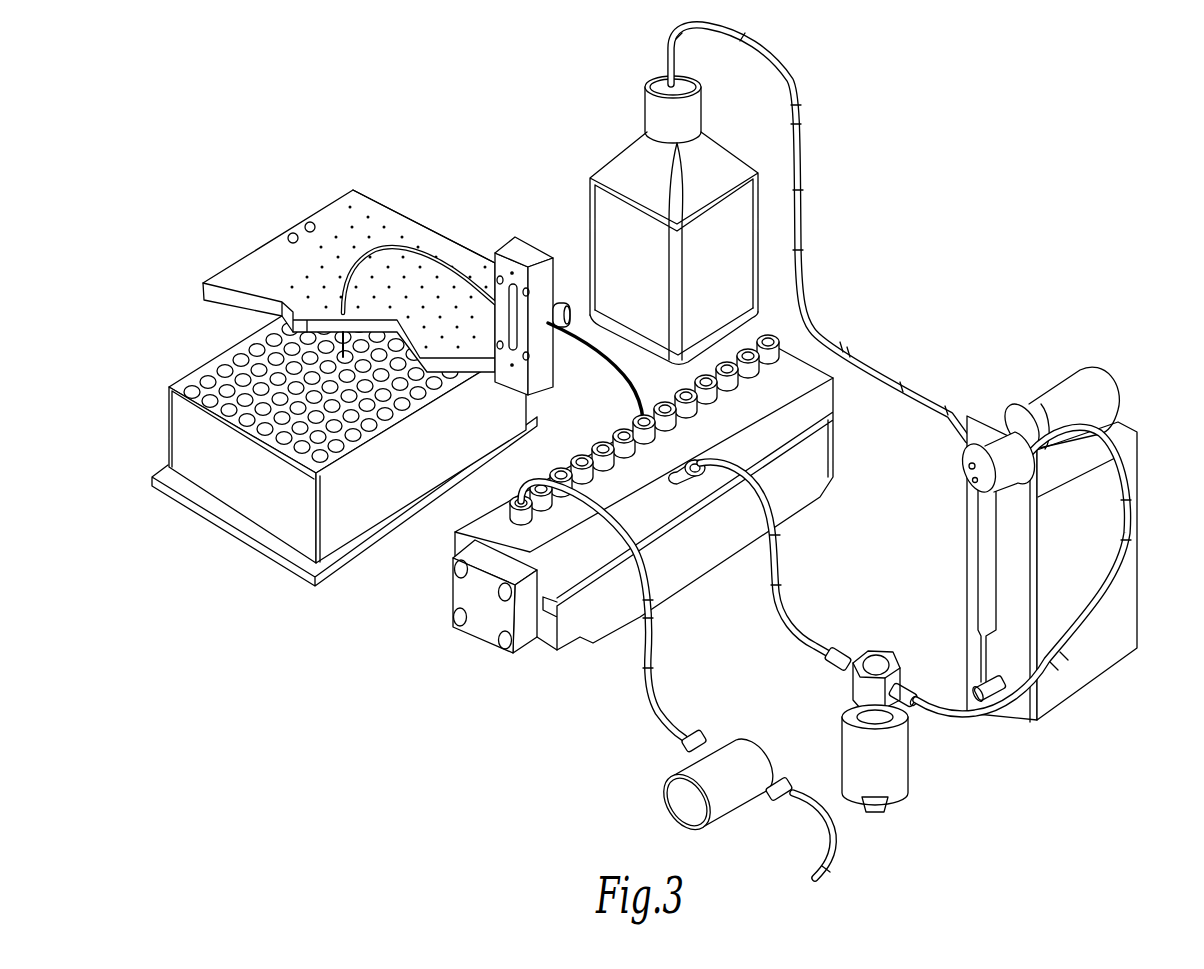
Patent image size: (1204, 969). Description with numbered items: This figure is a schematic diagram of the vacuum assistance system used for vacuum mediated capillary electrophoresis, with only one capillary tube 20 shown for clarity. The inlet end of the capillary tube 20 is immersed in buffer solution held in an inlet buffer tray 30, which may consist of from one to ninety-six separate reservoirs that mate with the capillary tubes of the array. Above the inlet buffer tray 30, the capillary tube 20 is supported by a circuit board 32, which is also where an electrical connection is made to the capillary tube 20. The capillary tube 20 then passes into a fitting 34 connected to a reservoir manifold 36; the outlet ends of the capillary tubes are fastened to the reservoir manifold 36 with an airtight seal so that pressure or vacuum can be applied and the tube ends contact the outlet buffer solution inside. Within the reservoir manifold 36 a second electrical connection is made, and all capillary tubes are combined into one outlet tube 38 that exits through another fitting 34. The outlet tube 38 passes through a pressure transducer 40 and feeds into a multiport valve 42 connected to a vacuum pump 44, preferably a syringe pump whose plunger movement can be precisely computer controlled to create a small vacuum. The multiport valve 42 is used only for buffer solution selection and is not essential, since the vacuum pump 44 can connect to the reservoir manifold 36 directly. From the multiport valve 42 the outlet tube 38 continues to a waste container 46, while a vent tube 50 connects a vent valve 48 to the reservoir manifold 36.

The capillary tube 20 is at (433, 262).
The inlet buffer tray 30 is at (230, 497).
The circuit board 32 is at (262, 268).
The fitting 34 is at (647, 437).
The reservoir manifold 36 is at (797, 400).
The outlet tube 38 is at (773, 560).
The pressure transducer 40 is at (897, 773).
The multiport valve 42 is at (962, 472).
The vacuum pump 44 is at (1123, 617).
The waste container 46 is at (632, 158).
The vent valve 48 is at (682, 802).
The vent tube 50 is at (640, 653).